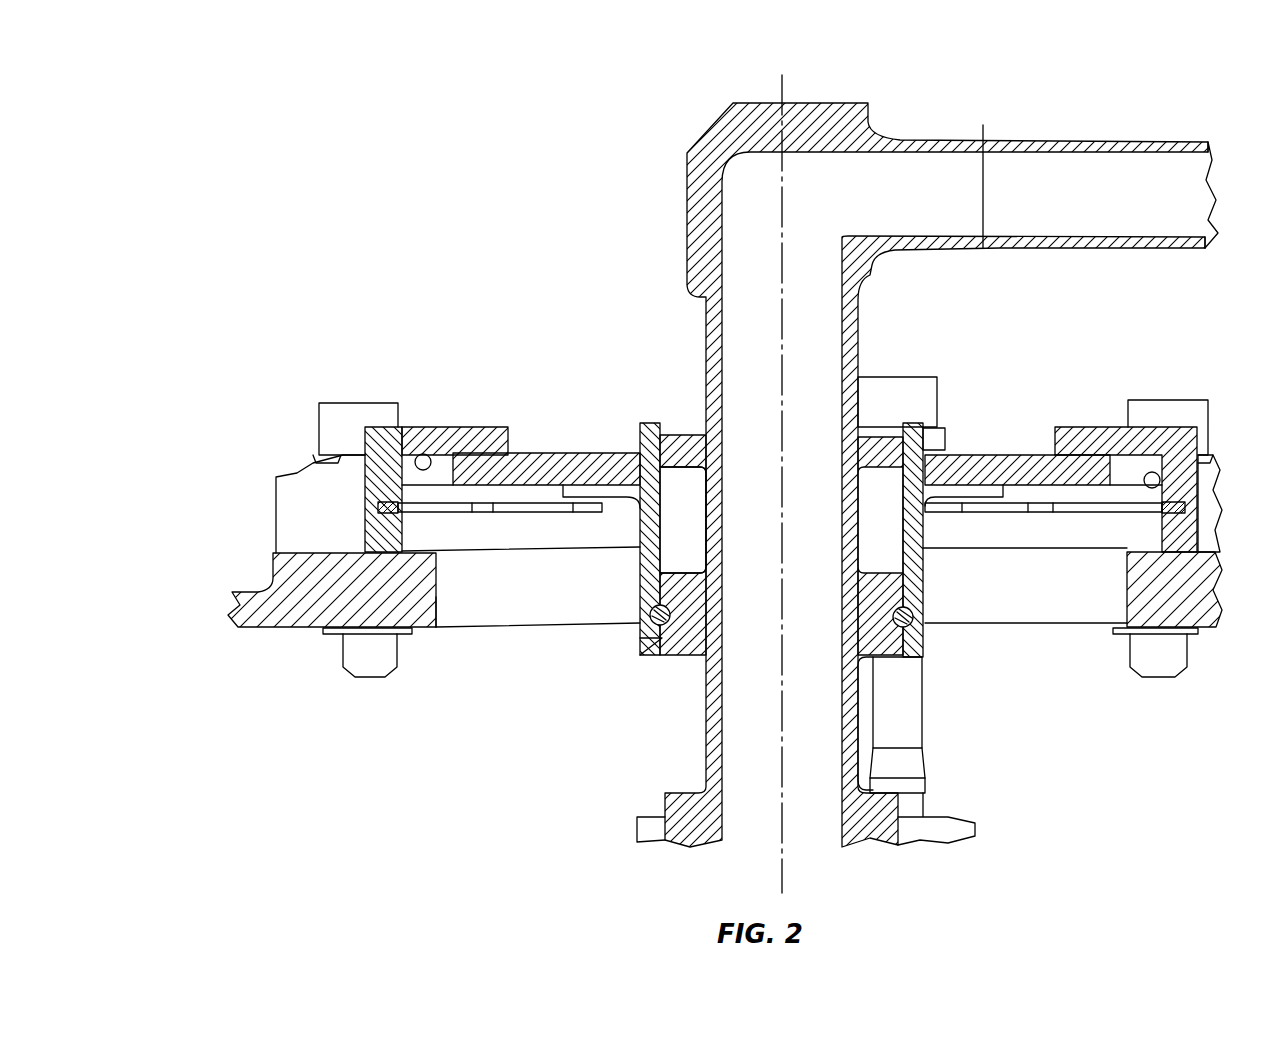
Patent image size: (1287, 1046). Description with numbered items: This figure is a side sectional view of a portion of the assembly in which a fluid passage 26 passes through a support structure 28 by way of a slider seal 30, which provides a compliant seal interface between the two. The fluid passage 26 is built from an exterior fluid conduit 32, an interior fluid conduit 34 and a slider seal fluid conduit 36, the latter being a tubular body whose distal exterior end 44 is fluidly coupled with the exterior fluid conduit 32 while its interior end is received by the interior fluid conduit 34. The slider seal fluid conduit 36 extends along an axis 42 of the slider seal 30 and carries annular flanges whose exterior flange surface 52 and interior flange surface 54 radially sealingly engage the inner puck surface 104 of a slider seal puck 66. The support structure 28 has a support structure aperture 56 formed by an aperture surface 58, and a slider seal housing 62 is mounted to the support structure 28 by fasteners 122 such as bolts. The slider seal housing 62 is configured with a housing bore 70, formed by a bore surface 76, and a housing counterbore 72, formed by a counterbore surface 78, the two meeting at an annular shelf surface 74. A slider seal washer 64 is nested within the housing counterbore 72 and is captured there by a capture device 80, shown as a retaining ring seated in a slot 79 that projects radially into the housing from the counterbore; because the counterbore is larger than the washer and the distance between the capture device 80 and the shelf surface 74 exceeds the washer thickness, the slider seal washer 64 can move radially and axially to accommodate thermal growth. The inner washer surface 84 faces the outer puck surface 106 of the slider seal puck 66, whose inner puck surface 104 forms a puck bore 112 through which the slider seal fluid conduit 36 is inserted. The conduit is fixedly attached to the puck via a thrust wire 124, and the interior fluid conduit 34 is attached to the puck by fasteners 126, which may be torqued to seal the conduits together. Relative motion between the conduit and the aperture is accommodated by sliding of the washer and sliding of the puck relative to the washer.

The fluid passage 26 is at (1037, 130).
The support structure 28 is at (222, 596).
The slider seal 30 is at (668, 502).
The exterior fluid conduit 32 is at (1117, 142).
The interior fluid conduit 34 is at (630, 822).
The slider seal fluid conduit 36 is at (673, 247).
The axis 42 is at (857, 486).
The distal exterior end 44 is at (983, 125).
The exterior flange surface 52 is at (642, 445).
The interior flange surface 54 is at (640, 645).
The support structure aperture 56 is at (515, 607).
The aperture surface 58 is at (438, 597).
The slider seal housing 62 is at (278, 490).
The slider seal washer 64 is at (543, 452).
The slider seal puck 66 is at (647, 420).
The housing bore 70 is at (520, 432).
The housing counterbore 72 is at (425, 497).
The annular shelf surface 74 is at (417, 453).
The bore surface 76 is at (1045, 445).
The counterbore surface 78 is at (1150, 488).
The slot 79 is at (378, 528).
The capture device 80 is at (1000, 513).
The inner washer surface 84 is at (905, 475).
The inner puck surface 104 is at (715, 515).
The outer puck surface 106 is at (947, 440).
The puck bore 112 is at (692, 495).
The fasteners 122 is at (332, 402).
The thrust wire 124 is at (917, 620).
The fasteners 126 is at (922, 743).